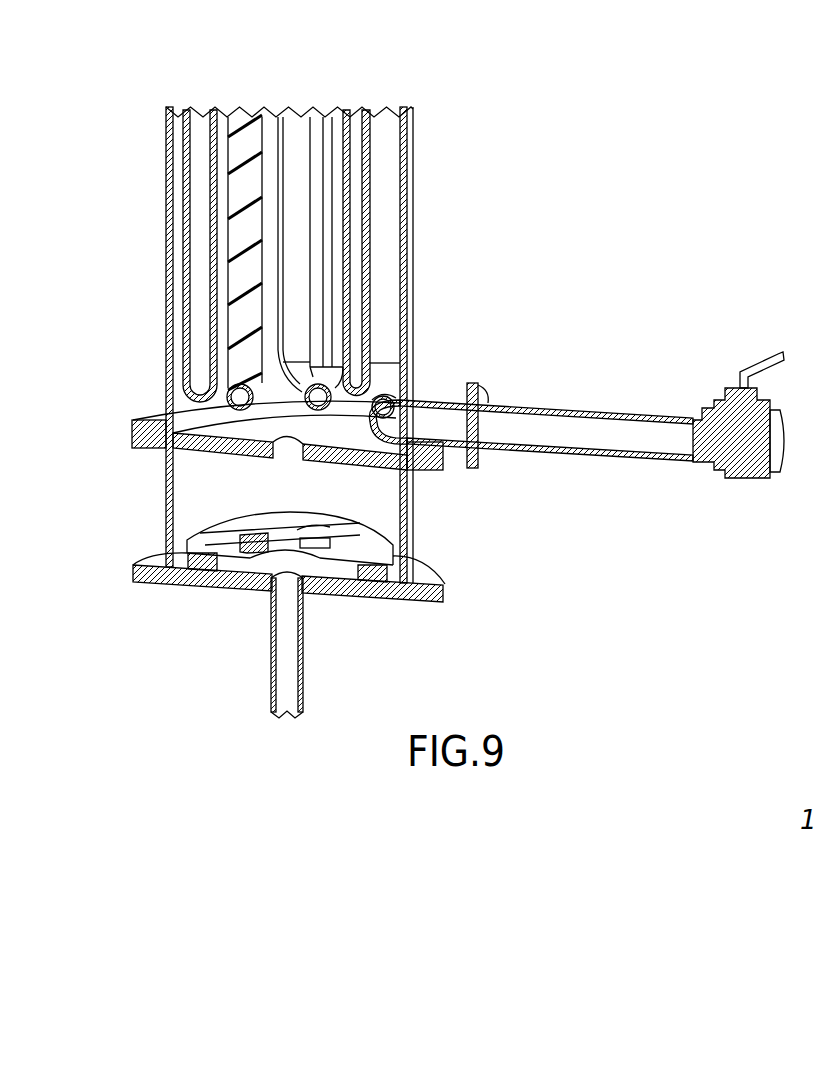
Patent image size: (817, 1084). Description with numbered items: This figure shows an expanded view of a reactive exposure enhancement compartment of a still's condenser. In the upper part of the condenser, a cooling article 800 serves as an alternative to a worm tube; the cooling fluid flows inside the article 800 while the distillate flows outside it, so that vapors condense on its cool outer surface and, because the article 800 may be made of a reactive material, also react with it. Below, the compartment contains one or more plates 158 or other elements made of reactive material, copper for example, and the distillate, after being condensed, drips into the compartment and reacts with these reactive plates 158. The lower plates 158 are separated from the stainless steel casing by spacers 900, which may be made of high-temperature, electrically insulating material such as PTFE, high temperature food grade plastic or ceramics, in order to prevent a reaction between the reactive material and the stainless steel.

The cooling article 800 is at (357, 270).
The plates 158 is at (380, 557).
The spacers 900 is at (375, 597).